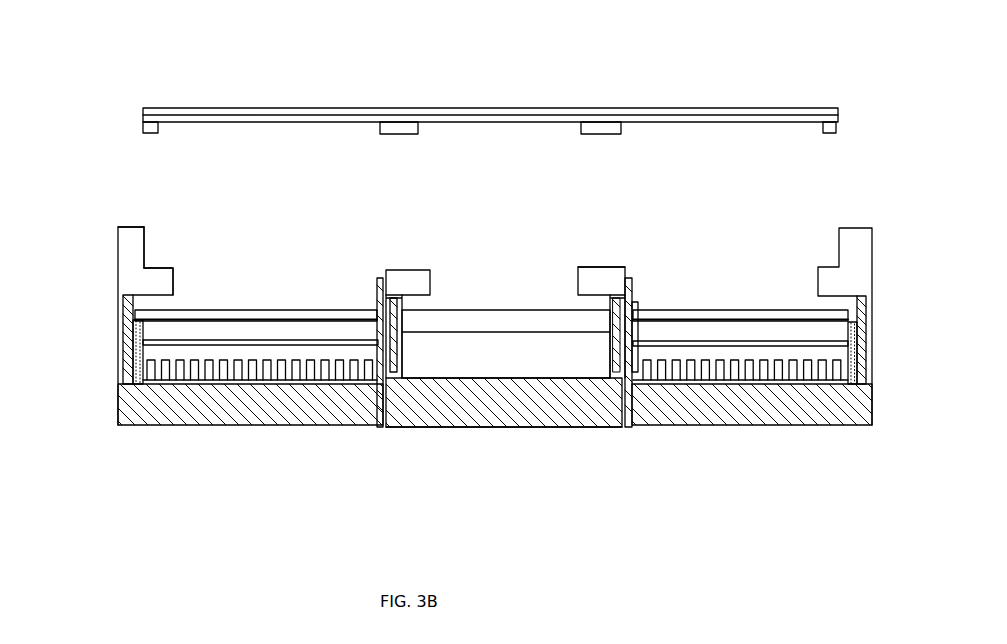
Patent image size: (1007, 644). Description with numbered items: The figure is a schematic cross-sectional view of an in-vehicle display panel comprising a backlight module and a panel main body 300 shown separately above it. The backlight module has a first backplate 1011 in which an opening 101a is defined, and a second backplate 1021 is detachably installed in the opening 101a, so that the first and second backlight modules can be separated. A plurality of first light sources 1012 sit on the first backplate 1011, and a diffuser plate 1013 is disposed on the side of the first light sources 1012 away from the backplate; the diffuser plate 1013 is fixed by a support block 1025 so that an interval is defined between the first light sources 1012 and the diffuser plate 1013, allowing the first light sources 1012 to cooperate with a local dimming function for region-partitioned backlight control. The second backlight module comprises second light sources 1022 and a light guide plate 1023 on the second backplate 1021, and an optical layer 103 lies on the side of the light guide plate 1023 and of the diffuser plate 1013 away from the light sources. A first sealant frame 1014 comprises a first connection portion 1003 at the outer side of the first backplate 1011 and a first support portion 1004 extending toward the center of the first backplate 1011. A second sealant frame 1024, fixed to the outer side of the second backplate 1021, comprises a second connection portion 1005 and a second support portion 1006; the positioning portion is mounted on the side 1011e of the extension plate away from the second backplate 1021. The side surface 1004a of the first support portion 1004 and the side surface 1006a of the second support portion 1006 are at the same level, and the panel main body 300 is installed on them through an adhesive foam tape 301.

The panel main body 300 is at (143, 118).
The adhesive foam tape 301 is at (405, 130).
The first backplate 1011 is at (140, 410).
The side of the extension plate 1011e is at (374, 284).
The first sealant frame 1014 is at (130, 265).
The first support portion 1004 is at (170, 282).
The side surface of the first support portion 1004a is at (151, 258).
The first connection portion 1003 is at (123, 305).
The diffuser plate 1013 is at (143, 335).
The optical layer 103 is at (272, 312).
The first light sources 1012 is at (147, 372).
The second sealant frame 1024 is at (410, 285).
The second light sources 1022 is at (398, 340).
The light guide plate 1023 is at (528, 348).
The second backplate 1021 is at (452, 395).
The opening 101a is at (386, 427).
The second support portion 1006 is at (607, 282).
The side surface of the second support portion 1006a is at (605, 260).
The second connection portion 1005 is at (632, 305).
The support block 1025 is at (848, 345).